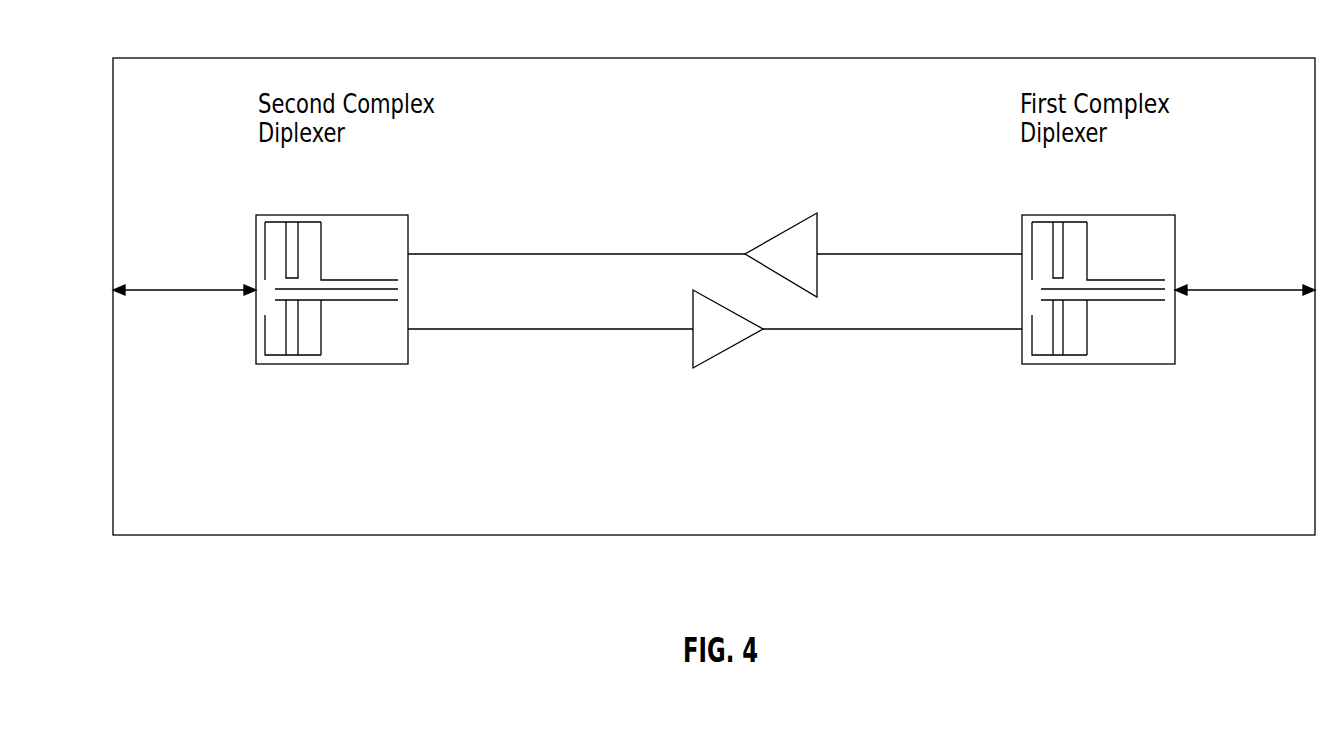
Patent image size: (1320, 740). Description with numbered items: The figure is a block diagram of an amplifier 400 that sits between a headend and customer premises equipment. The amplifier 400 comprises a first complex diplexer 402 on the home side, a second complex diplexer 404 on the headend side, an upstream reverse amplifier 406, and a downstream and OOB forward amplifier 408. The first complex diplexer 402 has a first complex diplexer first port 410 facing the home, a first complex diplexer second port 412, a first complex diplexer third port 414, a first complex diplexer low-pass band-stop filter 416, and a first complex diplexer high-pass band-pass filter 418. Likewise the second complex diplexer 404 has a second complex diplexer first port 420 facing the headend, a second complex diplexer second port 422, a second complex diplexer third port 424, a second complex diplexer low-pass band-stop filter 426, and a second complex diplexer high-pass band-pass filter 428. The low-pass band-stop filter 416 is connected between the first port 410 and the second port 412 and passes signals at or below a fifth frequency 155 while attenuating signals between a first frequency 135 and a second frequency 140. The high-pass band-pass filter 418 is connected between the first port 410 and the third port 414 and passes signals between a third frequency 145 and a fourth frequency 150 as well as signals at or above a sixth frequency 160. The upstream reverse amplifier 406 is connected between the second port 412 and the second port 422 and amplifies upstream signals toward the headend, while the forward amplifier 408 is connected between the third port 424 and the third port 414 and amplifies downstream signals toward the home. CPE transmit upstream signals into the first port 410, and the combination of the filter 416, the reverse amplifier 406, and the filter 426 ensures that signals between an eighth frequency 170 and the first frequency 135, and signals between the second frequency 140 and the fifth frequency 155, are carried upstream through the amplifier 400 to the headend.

The amplifier 400 is at (1235, 58).
The first complex diplexer 402 is at (1165, 215).
The second complex diplexer 404 is at (398, 215).
The upstream reverse amplifier 406 is at (782, 232).
The downstream and OOB forward amplifier 408 is at (693, 317).
The first complex diplexer first port 410 is at (1177, 296).
The first complex diplexer second port 412 is at (1020, 258).
The first complex diplexer third port 414 is at (1020, 323).
The first complex diplexer low-pass band-stop filter 416 is at (1112, 224).
The first complex diplexer high-pass band-pass filter 418 is at (1112, 357).
The second complex diplexer first port 420 is at (256, 296).
The second complex diplexer second port 422 is at (410, 254).
The second complex diplexer third port 424 is at (410, 331).
The second complex diplexer low-pass band-stop filter 426 is at (347, 224).
The second complex diplexer high-pass band-pass filter 428 is at (347, 357).
The first frequency 135 is at (277, 228).
The second frequency 140 is at (300, 226).
The third frequency 145 is at (287, 325).
The fourth frequency 150 is at (300, 352).
The fifth frequency 155 is at (322, 264).
The sixth frequency 160 is at (322, 313).
The eighth frequency 170 is at (265, 252).